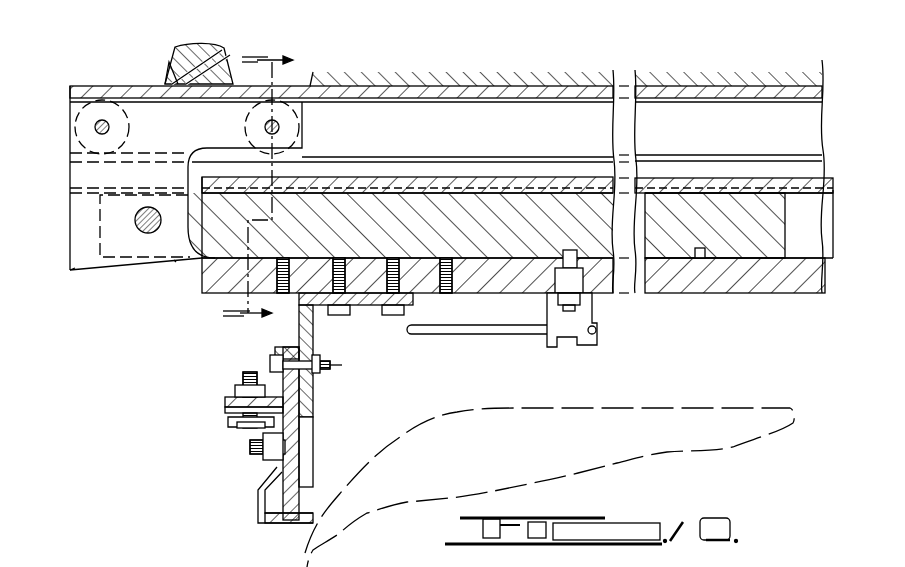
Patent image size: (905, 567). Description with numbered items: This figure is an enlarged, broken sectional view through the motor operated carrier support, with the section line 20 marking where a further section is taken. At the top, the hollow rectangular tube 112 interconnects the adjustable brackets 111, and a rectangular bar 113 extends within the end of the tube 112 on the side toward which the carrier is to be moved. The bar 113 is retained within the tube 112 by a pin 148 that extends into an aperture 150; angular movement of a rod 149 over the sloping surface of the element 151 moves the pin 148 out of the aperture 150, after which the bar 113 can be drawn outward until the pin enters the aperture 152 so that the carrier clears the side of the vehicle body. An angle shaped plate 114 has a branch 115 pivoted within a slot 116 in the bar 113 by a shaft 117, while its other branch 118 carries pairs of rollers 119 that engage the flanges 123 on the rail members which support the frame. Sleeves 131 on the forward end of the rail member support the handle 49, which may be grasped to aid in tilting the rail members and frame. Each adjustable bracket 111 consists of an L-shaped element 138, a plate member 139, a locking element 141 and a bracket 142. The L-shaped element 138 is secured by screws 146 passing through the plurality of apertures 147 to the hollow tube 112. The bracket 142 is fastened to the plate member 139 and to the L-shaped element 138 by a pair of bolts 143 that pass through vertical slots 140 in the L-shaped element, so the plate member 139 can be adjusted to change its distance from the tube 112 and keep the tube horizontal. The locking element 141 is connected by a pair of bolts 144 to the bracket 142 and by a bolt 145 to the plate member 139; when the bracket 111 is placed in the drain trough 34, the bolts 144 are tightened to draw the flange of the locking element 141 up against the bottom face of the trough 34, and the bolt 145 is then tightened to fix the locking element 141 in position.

The section line 20- 20 is at (258, 190).
The drain trough 34 is at (262, 516).
The handle 49 is at (187, 47).
The adjustable bracket 111 is at (222, 396).
The hollow rectangular tube 112 is at (733, 282).
The rectangular bar 113 is at (200, 262).
The angle shaped plate 114 is at (70, 214).
The branch 115 is at (76, 268).
The slot 116 is at (176, 260).
The shaft 117 is at (148, 228).
The branch 118 is at (302, 118).
The rollers 119 is at (262, 148).
The flanges 123 is at (505, 157).
The sleeves 131 is at (168, 62).
The L-shaped element 138 is at (312, 332).
The plate member 139 is at (313, 398).
The vertical slots 140 is at (320, 369).
The locking element 141 is at (260, 488).
The bracket 142 is at (225, 404).
The bolts 143 is at (342, 365).
The bolts 144 is at (243, 433).
The bolt 145 is at (250, 450).
The screws 146 is at (396, 315).
The apertures 147 is at (228, 258).
The pin 148 is at (548, 258).
The rod 149 is at (473, 332).
The aperture 150 is at (575, 249).
The element 151 is at (555, 330).
The aperture 152 is at (700, 258).